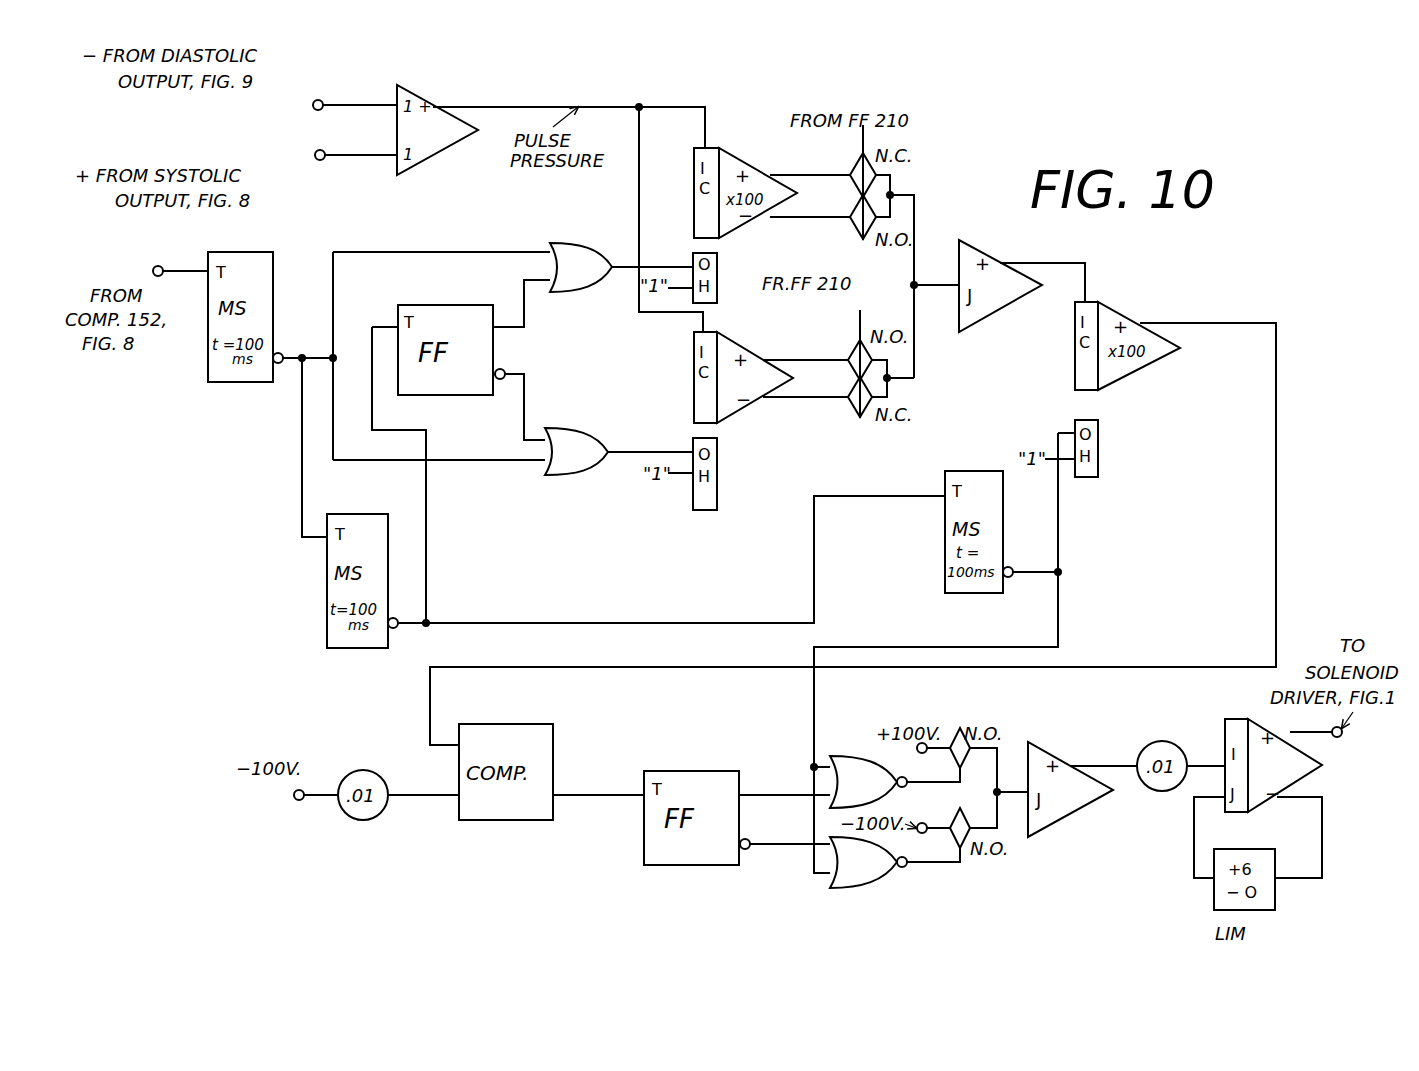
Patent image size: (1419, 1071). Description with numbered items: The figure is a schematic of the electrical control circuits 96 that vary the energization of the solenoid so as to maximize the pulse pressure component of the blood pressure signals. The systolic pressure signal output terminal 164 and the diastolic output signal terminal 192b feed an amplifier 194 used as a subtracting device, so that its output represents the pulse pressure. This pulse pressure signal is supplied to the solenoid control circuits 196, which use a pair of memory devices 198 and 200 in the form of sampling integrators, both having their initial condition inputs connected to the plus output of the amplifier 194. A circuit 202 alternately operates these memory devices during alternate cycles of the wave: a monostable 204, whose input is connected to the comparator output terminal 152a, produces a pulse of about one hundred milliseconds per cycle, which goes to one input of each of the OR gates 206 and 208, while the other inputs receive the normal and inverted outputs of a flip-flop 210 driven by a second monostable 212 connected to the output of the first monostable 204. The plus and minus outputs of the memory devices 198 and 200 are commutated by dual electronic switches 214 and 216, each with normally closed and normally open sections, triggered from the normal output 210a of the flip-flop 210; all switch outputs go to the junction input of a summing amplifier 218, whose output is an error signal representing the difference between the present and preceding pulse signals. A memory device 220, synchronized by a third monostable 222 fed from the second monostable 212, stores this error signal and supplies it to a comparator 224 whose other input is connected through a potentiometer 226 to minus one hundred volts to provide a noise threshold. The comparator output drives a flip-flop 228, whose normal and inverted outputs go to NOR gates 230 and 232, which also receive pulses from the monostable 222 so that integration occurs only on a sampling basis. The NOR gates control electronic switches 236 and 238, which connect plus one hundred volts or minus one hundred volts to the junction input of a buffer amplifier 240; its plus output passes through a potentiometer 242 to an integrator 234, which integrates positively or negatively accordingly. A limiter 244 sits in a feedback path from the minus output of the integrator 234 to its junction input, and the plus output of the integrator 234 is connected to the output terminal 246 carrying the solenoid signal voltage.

The electrical control circuits 96 is at (1272, 292).
The output terminal of the comparator 152a is at (160, 266).
The systolic pressure signal output terminal 164 is at (318, 165).
The diastolic output signal terminal 192b is at (290, 82).
The amplifier 194 is at (414, 96).
The solenoid control circuits 196 is at (768, 88).
The memory device 198 is at (736, 156).
The memory device 200 is at (742, 410).
The circuit for alternately operating the memory devices 202 is at (218, 510).
The monostable 204 is at (238, 253).
The OR gate 206 is at (565, 246).
The OR gate 208 is at (562, 472).
The flip-flop 210 is at (440, 396).
The normal output of the flip-flop 210a is at (515, 330).
The second monostable 212 is at (326, 560).
The dual electronic switch 214 is at (842, 230).
The dual electronic switch 216 is at (816, 338).
The summing amplifier 218 is at (1002, 320).
The memory device 220 is at (1116, 310).
The third monostable 222 is at (945, 556).
The comparator 224 is at (490, 724).
The potentiometer 226 is at (350, 818).
The flip-flop 228 is at (675, 860).
The NOR gate 230 is at (850, 746).
The NOR gate 232 is at (850, 880).
The integrator 234 is at (1225, 730).
The electronic switch 236 is at (962, 730).
The electronic switch 238 is at (956, 812).
The buffer amplifier 240 is at (1056, 822).
The potentiometer 242 is at (1166, 790).
The limiter 244 is at (1214, 898).
The output terminal 246 is at (1345, 738).